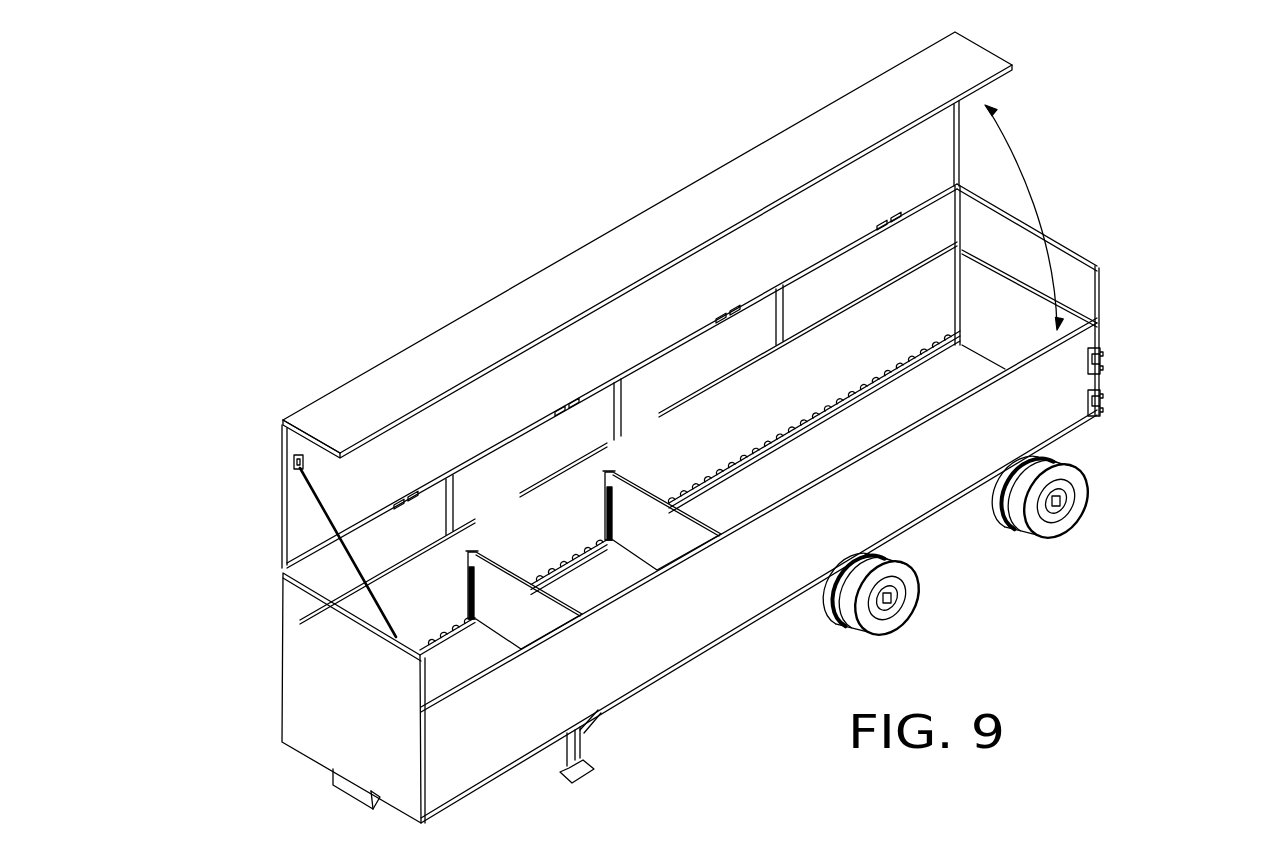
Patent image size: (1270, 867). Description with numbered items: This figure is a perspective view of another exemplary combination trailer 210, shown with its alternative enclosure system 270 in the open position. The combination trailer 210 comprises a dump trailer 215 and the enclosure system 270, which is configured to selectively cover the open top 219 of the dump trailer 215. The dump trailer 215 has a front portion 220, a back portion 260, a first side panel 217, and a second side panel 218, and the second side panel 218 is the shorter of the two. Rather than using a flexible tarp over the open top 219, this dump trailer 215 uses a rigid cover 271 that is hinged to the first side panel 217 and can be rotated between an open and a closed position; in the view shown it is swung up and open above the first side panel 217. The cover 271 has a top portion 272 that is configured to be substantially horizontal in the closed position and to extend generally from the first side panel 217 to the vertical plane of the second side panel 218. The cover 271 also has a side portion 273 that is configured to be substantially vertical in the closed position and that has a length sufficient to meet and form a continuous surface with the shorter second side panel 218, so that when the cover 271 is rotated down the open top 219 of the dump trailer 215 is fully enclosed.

The combination trailer 210 is at (286, 162).
The dump trailer 215 is at (1130, 367).
The first side panel 217 is at (330, 574).
The second side panel 218 is at (703, 614).
The open top 219 is at (279, 437).
The front portion 220 is at (330, 688).
The back portion 260 is at (1098, 277).
The enclosure system 270 is at (1030, 50).
The rigid cover 271 is at (567, 241).
The top portion 272 is at (283, 506).
The side portion 273 is at (345, 425).